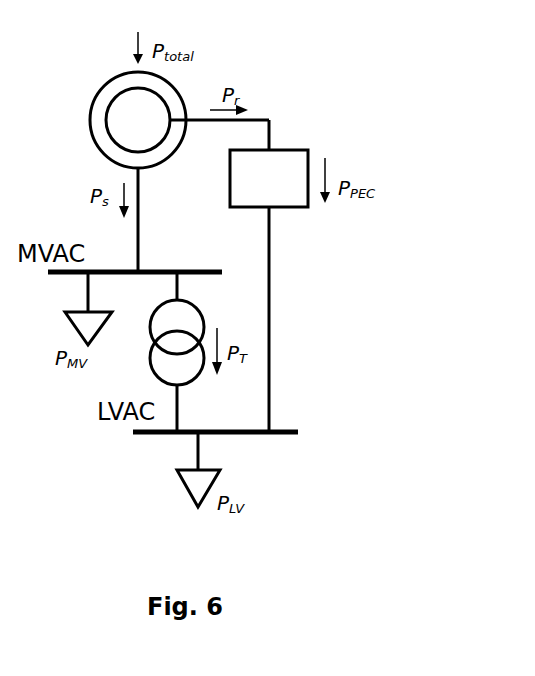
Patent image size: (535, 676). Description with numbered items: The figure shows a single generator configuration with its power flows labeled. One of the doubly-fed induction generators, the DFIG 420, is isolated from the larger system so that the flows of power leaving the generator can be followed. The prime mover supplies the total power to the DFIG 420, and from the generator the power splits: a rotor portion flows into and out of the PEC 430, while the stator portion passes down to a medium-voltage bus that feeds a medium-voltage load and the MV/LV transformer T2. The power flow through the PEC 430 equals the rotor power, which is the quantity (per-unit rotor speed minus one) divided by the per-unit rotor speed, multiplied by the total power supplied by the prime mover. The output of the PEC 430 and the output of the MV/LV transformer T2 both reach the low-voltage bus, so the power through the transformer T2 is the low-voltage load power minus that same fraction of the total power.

The DFIG 420 is at (82, 123).
The PEC 430 is at (293, 142).
The MV/LV transformer T2 is at (203, 308).